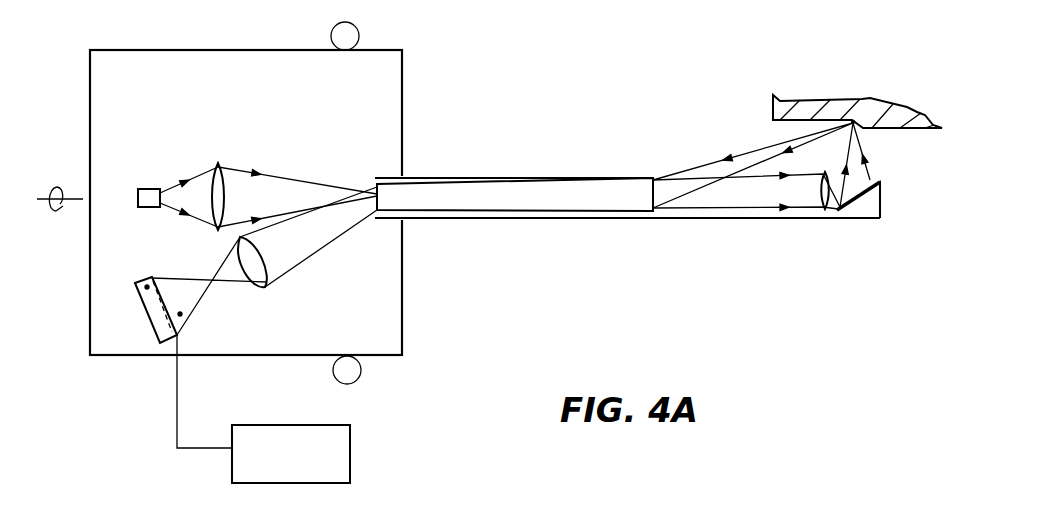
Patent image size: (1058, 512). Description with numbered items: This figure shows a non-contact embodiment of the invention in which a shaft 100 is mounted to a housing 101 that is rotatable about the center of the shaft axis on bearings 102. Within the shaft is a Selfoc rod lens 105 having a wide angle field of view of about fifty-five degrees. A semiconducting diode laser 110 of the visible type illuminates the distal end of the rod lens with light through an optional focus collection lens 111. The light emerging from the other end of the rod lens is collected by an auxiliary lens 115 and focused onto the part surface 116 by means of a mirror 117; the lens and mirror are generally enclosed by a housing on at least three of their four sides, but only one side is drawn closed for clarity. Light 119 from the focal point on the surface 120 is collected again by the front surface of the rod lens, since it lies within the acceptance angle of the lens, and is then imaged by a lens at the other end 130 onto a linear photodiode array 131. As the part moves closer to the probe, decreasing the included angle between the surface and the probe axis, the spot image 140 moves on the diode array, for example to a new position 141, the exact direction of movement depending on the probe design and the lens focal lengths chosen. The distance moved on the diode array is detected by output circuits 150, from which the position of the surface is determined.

The shaft 100 is at (533, 176).
The housing 101 is at (402, 135).
The bearings 102 is at (359, 31).
The Selfoc rod lens 105 is at (625, 200).
The semiconducting diode laser 110 is at (152, 188).
The focus collection lens 111 is at (216, 165).
The auxiliary lens 115 is at (832, 208).
The part surface 116 is at (920, 130).
The mirror 117 is at (870, 197).
The light from the focal point 119 is at (703, 167).
The focal point on the surface 120 is at (853, 118).
The lens at the other end 130 is at (265, 275).
The linear photodiode array 131 is at (178, 340).
The spot image 140 is at (180, 314).
The new position 141 is at (147, 287).
The output circuits 150 is at (350, 443).